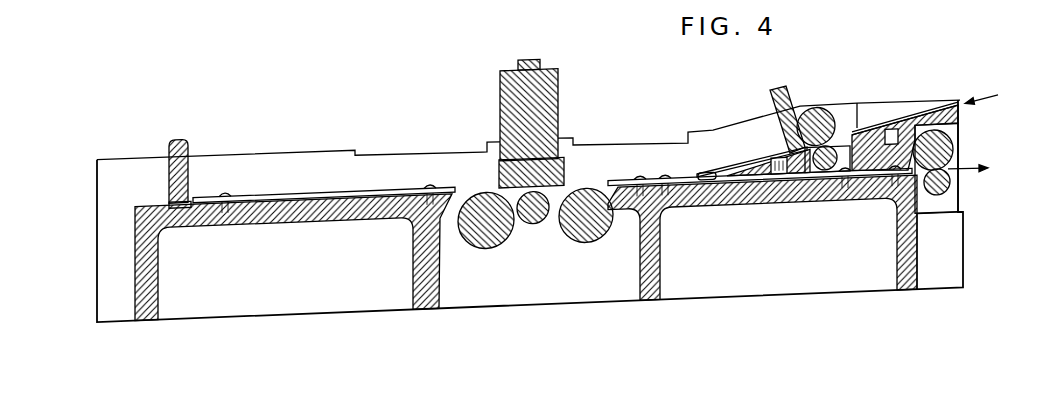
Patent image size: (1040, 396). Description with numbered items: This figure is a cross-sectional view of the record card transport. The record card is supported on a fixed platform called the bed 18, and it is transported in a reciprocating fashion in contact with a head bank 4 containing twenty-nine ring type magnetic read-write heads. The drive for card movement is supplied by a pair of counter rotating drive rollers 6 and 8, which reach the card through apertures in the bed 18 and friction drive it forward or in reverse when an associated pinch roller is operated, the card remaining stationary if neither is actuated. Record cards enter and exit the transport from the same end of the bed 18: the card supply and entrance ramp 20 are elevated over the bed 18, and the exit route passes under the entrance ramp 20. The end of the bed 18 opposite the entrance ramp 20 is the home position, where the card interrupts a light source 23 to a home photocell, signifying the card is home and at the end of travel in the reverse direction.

The head bank 4 is at (540, 133).
The drive roller 6 is at (594, 232).
The drive roller 8 is at (497, 250).
The bed 18 is at (279, 198).
The entrance ramp 20 is at (743, 168).
The light source 23 is at (183, 168).